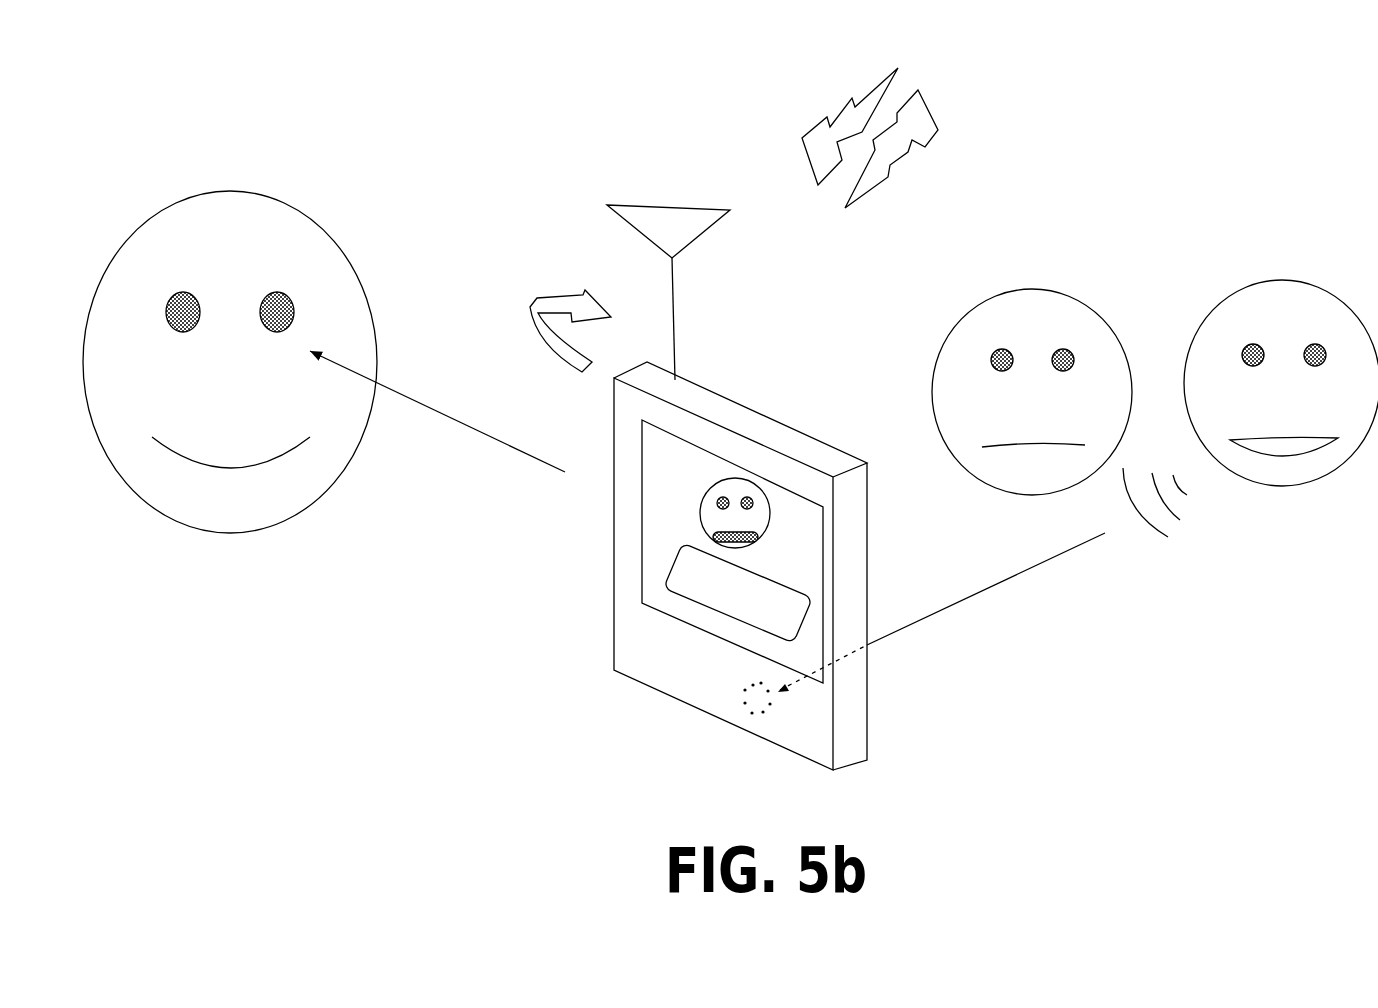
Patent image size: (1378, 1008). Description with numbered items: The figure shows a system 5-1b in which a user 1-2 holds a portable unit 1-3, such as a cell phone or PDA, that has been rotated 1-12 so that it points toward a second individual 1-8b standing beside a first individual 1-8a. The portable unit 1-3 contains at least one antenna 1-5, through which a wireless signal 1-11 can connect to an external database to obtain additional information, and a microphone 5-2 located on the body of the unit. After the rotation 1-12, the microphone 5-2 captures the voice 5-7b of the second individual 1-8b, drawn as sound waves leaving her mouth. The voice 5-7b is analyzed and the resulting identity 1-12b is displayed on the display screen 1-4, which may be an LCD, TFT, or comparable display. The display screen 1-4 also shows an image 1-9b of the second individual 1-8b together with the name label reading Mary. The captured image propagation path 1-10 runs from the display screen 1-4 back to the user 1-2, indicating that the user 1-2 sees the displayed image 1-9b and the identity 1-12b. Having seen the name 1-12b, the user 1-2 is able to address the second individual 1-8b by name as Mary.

The system 5-1b is at (414, 138).
The user 1-2 is at (230, 542).
The captured image propagation path 1-10 is at (429, 403).
The rotation 1-12 is at (543, 296).
The antenna 1-5 is at (680, 302).
The wireless signal 1-11 is at (932, 147).
The first individual 1-8a is at (1081, 300).
The second individual 1-8b is at (1275, 491).
The voice 5-7b is at (1158, 538).
The portable unit 1-3 is at (871, 750).
The display screen 1-4 is at (660, 619).
The image 1-9b is at (698, 512).
The identity 1-12b is at (666, 565).
The microphone 5-2 is at (746, 697).